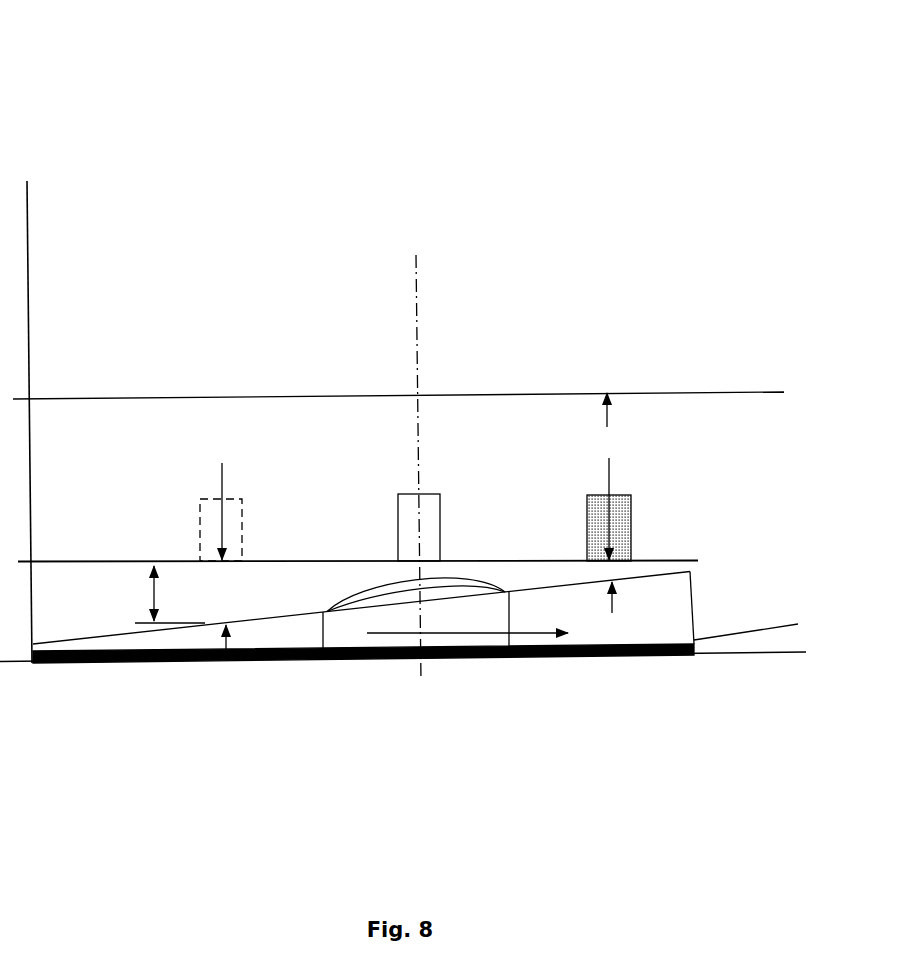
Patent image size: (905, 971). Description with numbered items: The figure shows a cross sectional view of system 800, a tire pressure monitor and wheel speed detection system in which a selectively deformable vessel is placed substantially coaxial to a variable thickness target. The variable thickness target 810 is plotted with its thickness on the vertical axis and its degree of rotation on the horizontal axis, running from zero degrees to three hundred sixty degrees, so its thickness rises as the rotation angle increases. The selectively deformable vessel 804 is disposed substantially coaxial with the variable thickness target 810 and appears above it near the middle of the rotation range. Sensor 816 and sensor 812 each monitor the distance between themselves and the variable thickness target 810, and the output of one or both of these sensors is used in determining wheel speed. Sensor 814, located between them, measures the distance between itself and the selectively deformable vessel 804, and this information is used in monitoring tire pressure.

The system 800 is at (232, 146).
The selectively deformable vessel 804 is at (436, 608).
The variable thickness target 810 is at (684, 596).
The sensor 812 is at (631, 497).
The sensor 814 is at (434, 494).
The sensor 816 is at (233, 499).